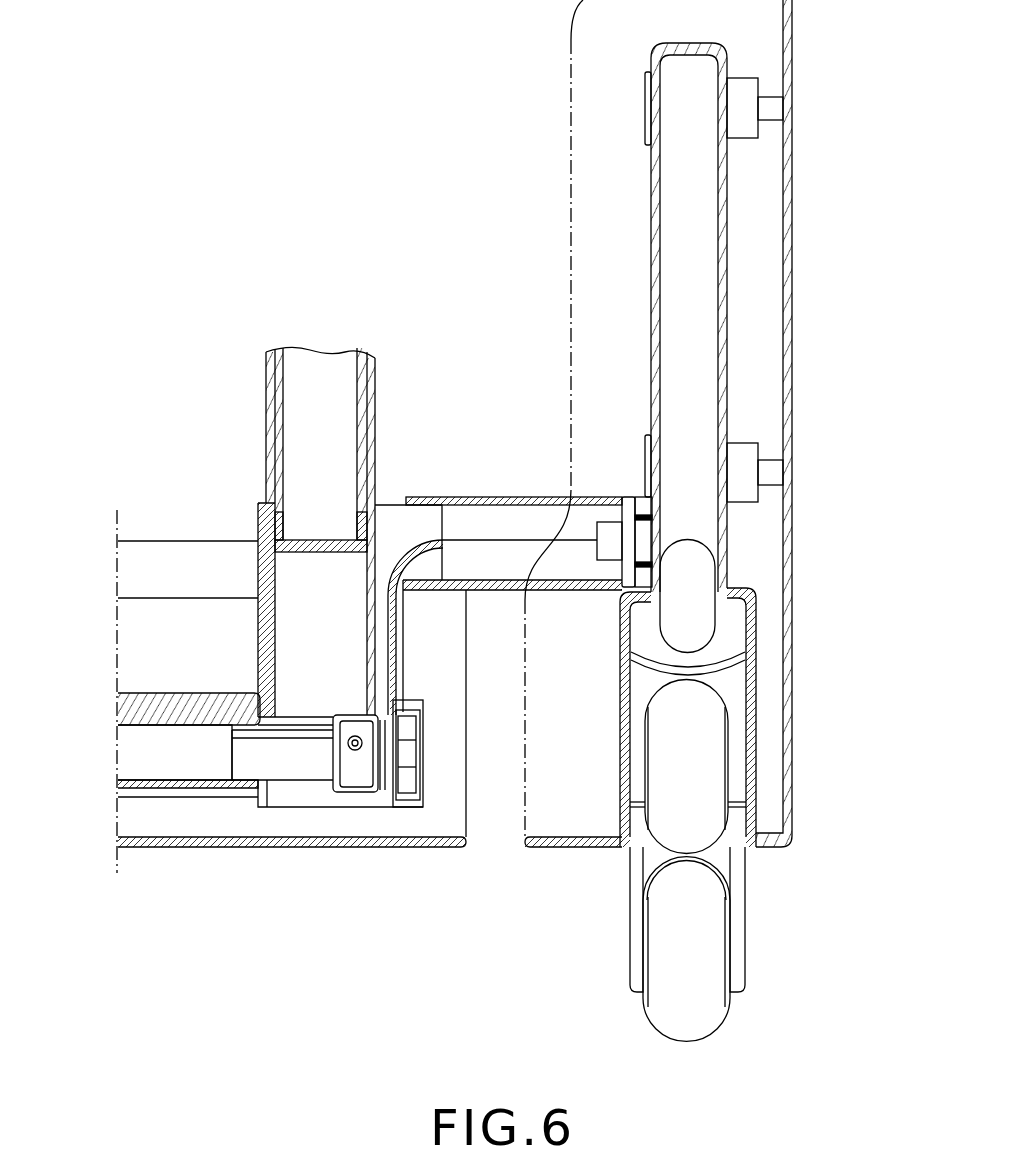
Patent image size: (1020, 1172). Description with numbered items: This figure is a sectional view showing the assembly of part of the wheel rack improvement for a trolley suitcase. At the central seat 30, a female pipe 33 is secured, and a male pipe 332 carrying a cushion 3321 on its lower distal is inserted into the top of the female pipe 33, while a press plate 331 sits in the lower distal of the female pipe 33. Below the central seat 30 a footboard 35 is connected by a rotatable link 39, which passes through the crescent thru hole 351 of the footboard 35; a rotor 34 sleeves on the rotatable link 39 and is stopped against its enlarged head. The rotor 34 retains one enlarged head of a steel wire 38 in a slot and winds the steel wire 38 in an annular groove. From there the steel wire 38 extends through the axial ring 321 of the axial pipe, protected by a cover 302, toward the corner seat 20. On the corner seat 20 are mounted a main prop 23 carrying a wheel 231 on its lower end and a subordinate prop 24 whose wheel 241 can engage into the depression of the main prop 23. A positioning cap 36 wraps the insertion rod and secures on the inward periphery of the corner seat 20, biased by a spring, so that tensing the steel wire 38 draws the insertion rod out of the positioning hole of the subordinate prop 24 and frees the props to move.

The corner seat 20 is at (793, 577).
The main prop 23 is at (735, 868).
The lower roller 231 is at (705, 943).
The subordinate prop 24 is at (732, 688).
The wheel 241 is at (703, 748).
The central seat 30 is at (172, 847).
The cover 302 is at (530, 495).
The axial ring 321 is at (407, 533).
The female pipe 33 is at (272, 377).
The press plate 331 is at (293, 623).
The male pipe 332 is at (312, 422).
The cushion 3321 is at (282, 522).
The rotor 34 is at (350, 773).
The footboard 35 is at (138, 712).
The crescent thru hole 351 is at (138, 762).
The positioning cap 36 is at (628, 510).
The steel wire 38 is at (480, 540).
The rotatable link 39 is at (300, 773).